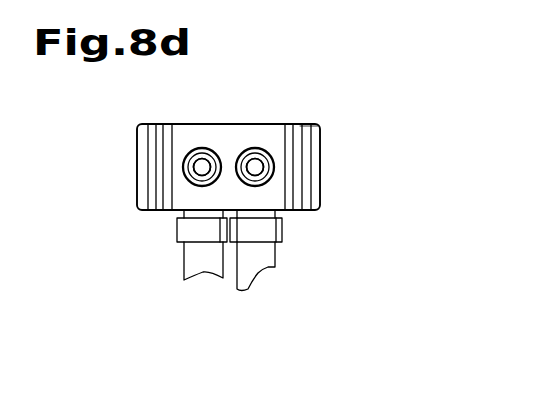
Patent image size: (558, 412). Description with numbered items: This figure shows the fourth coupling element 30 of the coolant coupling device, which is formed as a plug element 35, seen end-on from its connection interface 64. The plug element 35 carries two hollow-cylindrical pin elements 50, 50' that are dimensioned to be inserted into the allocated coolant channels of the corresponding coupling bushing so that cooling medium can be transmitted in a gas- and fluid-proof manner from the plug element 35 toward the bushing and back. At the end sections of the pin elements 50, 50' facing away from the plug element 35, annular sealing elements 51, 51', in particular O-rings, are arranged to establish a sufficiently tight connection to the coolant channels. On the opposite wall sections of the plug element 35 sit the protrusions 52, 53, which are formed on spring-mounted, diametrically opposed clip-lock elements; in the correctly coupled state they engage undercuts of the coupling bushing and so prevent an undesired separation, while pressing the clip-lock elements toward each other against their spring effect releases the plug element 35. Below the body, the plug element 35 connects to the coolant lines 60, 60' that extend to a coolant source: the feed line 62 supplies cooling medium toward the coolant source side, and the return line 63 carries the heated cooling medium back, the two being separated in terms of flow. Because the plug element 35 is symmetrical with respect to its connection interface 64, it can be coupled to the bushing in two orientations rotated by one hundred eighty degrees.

The fourth coupling element 30 is at (340, 124).
The plug element 35 is at (228, 138).
The hollow-cylindrical pin element 50 is at (190, 124).
The hollow-cylindrical pin element 50' is at (272, 122).
The annular sealing element 51 is at (129, 194).
The annular sealing element 51' is at (320, 192).
The protrusion 52 is at (143, 165).
The protrusion 53 is at (315, 162).
The coolant line 60 is at (158, 275).
The coolant line 60' is at (301, 275).
The feed line 62 is at (192, 255).
The return line 63 is at (265, 255).
The connection interface 64 is at (305, 120).